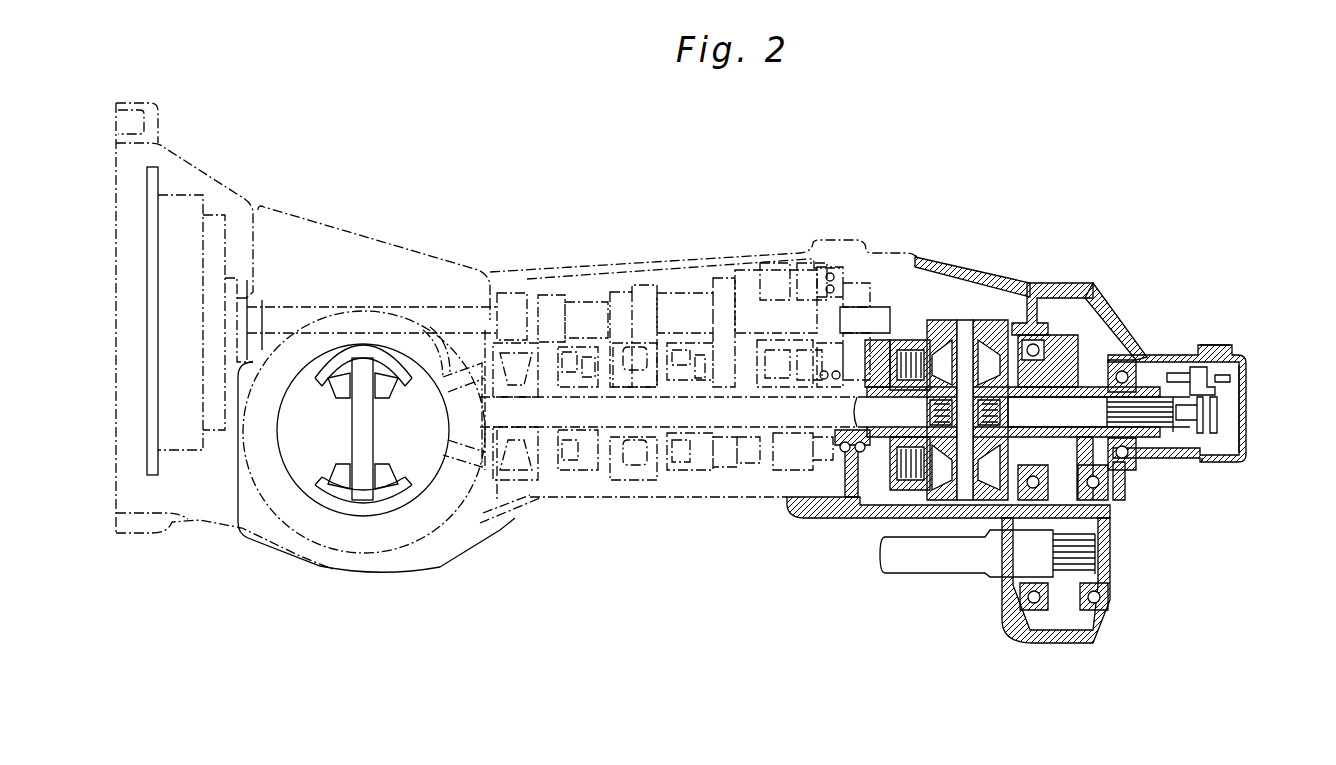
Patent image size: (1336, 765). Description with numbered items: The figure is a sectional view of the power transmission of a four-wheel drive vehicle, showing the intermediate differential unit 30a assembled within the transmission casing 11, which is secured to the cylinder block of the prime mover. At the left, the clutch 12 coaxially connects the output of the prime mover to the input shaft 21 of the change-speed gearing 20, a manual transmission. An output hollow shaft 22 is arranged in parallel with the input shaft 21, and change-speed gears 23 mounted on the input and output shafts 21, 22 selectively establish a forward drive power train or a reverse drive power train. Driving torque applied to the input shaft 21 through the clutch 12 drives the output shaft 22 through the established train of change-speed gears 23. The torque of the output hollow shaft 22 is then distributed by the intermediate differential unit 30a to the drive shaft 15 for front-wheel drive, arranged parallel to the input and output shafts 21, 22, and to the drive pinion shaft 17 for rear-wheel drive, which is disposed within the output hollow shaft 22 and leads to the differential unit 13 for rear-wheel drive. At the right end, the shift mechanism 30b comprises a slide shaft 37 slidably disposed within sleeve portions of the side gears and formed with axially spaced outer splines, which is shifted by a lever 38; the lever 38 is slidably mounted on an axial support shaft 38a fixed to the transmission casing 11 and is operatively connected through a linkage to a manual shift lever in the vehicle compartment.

The transmission casing 11 is at (836, 240).
The clutch 12 is at (185, 210).
The differential unit for rear-wheel drive 13 is at (320, 497).
The drive shaft 15 is at (918, 565).
The drive pinion shaft 17 is at (622, 415).
The change-speed gearing 20 is at (675, 290).
The input shaft 21 is at (592, 305).
The output hollow shaft 22 is at (775, 440).
The change-speed gears 23 is at (724, 390).
The intermediate differential unit 30a is at (978, 310).
The shift mechanism 30b is at (1186, 440).
The slide shaft 37 is at (1212, 413).
The lever 38 is at (1190, 367).
The axial support shaft 38a is at (1232, 370).